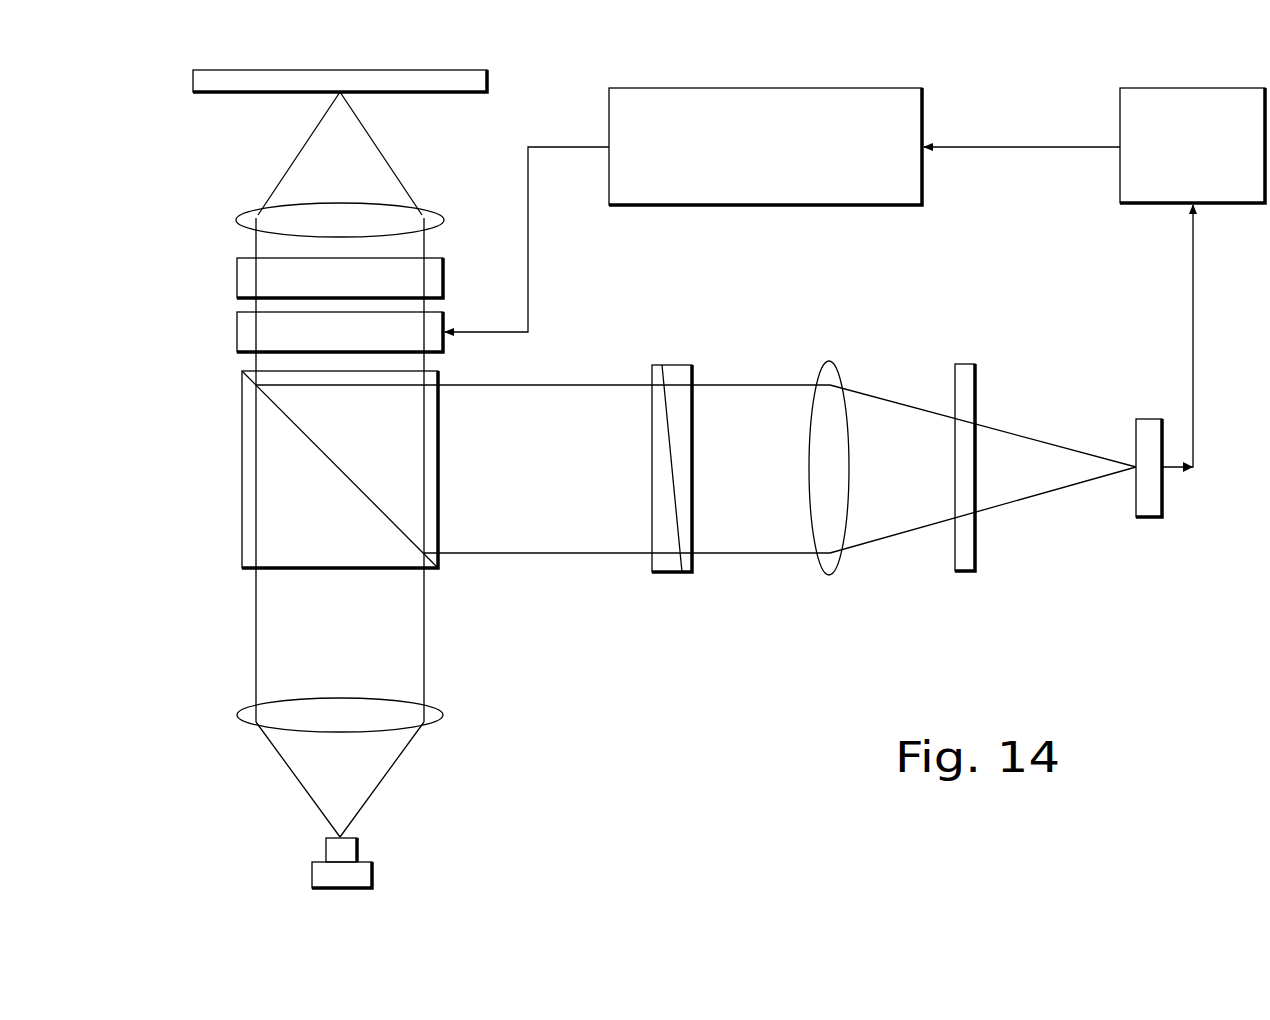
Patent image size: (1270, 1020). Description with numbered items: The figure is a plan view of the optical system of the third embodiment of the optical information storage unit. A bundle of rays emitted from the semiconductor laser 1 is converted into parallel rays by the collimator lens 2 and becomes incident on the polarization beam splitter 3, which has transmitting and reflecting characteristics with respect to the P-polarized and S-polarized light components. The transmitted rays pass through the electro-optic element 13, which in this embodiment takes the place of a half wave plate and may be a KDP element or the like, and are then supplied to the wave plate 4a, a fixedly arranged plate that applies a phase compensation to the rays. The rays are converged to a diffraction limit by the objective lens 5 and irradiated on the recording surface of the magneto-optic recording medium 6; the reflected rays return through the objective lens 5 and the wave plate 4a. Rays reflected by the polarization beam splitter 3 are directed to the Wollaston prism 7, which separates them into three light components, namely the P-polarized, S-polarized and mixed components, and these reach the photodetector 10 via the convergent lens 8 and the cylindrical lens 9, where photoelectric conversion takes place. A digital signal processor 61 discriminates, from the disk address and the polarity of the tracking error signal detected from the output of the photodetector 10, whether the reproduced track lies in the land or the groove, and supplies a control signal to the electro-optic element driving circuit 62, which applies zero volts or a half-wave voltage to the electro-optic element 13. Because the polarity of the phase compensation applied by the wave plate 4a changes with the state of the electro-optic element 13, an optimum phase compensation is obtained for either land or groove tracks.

The semiconductor laser 1 is at (364, 875).
The collimator lens 2 is at (432, 710).
The polarization beam splitter 3 is at (242, 500).
The wave plate 4a is at (265, 279).
The electro-optic element 13 is at (254, 327).
The objective lens 5 is at (429, 221).
The magneto-optic recording medium 6 is at (487, 82).
The Wollaston prism 7 is at (680, 400).
The convergent lens 8 is at (824, 534).
The cylindrical lens 9 is at (968, 559).
The photodetector 10 is at (1148, 419).
The digital signal processor (DSP) 61 is at (1168, 88).
The electro-optic element driving circuit 62 is at (856, 88).